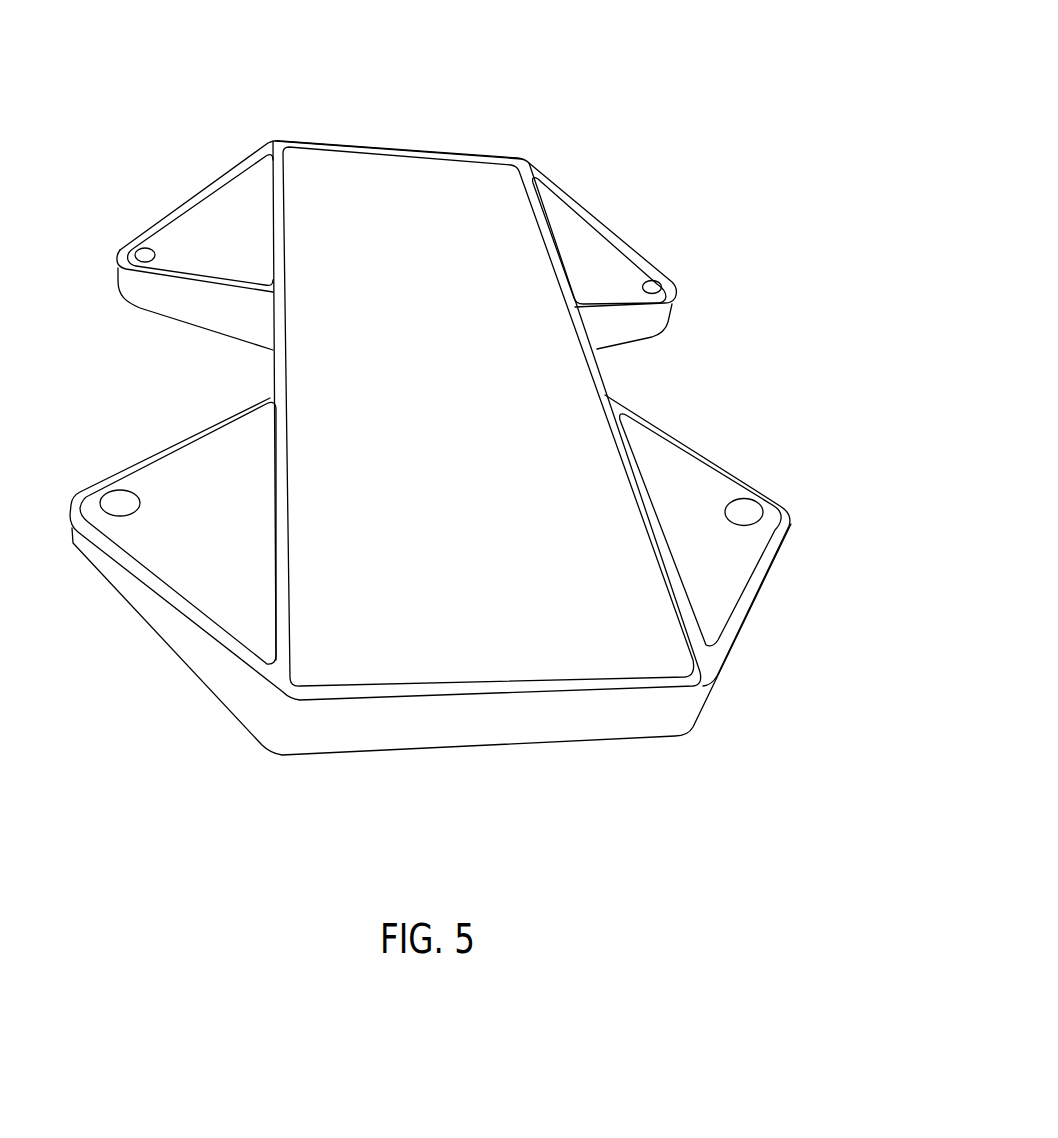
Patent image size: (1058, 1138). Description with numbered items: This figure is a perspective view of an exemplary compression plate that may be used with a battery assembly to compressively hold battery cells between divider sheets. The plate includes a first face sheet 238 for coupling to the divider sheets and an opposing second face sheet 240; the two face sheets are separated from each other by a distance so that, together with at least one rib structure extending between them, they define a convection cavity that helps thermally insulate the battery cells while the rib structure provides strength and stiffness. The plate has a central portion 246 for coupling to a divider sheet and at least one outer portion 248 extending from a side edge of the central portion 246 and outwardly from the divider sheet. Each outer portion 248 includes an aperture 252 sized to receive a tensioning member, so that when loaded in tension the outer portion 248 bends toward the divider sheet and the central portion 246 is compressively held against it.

The central portion 246 is at (377, 137).
The first face sheet 238 is at (438, 180).
The outer portion 248 is at (173, 192).
The aperture 252 is at (143, 255).
The second face sheet 240 is at (503, 765).